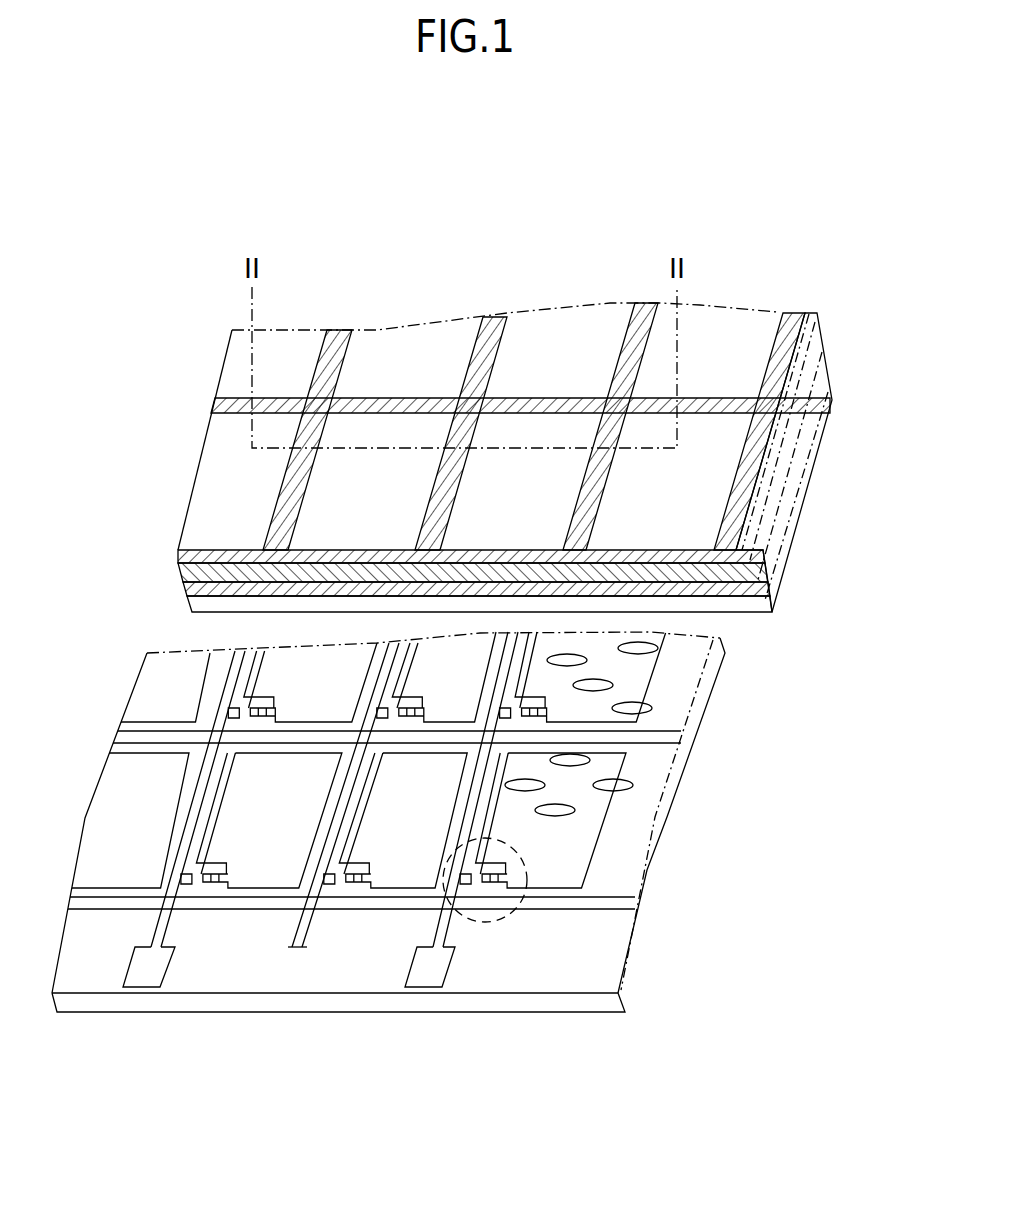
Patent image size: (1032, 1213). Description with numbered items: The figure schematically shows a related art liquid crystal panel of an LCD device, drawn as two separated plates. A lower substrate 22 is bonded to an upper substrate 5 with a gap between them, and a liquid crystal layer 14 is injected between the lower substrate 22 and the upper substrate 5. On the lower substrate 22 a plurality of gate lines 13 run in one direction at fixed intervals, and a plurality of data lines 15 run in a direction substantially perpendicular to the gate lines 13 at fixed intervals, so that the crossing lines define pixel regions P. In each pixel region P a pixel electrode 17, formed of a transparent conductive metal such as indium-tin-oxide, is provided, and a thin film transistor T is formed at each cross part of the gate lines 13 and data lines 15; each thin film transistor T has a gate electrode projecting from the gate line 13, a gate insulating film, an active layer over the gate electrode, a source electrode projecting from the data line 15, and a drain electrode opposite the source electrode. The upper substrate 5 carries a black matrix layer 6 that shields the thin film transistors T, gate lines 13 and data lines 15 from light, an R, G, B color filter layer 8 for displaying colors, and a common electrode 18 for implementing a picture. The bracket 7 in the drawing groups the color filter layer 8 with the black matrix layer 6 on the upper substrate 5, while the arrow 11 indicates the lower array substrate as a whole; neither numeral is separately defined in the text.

The upper substrate 5 is at (178, 573).
The black matrix layer 6 is at (792, 405).
The color filter layer 7 is at (883, 350).
The color filter layer 8 is at (752, 358).
The thin film transistor array substrate 11 is at (760, 809).
The gate lines 13 is at (593, 903).
The liquid crystal layer 14 is at (628, 700).
The data lines 15 is at (438, 930).
The pixel electrode 17 is at (598, 845).
The common electrode 18 is at (755, 602).
The lower substrate 22 is at (580, 1003).
The pixel region P is at (643, 785).
The thin film transistor T is at (485, 923).